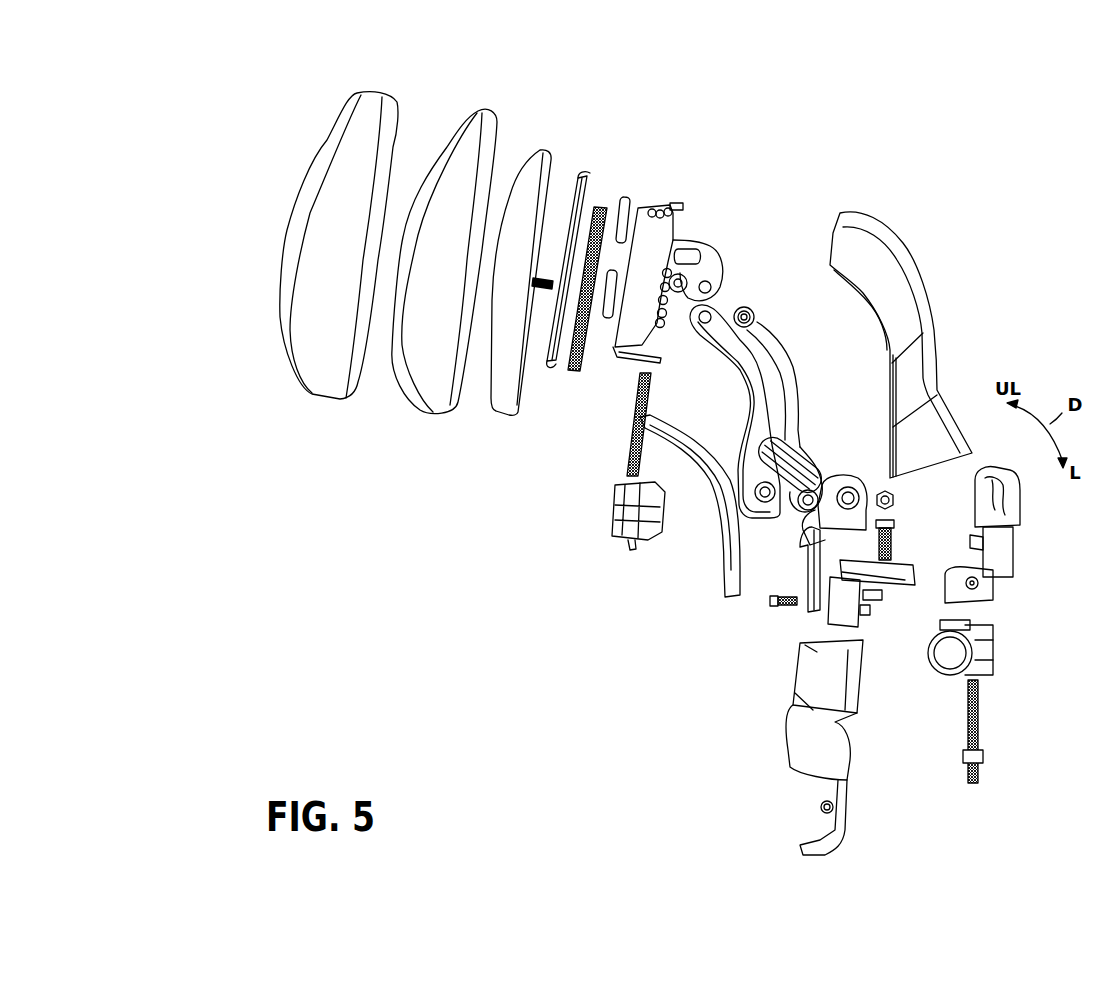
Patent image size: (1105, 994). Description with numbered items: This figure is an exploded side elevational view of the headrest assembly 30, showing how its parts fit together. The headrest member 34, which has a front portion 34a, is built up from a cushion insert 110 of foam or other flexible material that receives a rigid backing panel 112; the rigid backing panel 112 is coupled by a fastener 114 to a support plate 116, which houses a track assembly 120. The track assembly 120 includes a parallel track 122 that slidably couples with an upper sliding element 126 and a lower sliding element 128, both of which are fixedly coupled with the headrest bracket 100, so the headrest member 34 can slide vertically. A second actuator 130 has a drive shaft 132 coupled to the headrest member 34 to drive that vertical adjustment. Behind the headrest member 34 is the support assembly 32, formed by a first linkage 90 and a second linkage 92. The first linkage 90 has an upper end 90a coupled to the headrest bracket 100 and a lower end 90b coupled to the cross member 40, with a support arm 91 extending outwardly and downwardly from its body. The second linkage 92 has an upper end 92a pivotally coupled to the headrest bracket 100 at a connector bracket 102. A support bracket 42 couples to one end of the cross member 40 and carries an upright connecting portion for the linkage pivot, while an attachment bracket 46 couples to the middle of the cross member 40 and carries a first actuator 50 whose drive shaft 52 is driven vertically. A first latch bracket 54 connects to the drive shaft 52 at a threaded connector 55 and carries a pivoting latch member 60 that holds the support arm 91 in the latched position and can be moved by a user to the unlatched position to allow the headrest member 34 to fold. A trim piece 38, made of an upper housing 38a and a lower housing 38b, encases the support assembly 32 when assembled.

The headrest assembly 30 is at (964, 244).
The support assembly 32 is at (772, 224).
The headrest member 34 is at (355, 72).
The front portion 34a is at (282, 315).
The trim piece 38 is at (875, 214).
The upper housing 38a is at (923, 293).
The lower housing 38b is at (722, 495).
The cross member 40 is at (817, 618).
The support bracket 42 is at (803, 582).
The attachment bracket 46 is at (1023, 562).
The first actuator 50 is at (990, 660).
The drive shaft 52 is at (977, 727).
The first latch bracket 54 is at (1020, 557).
The threaded connector 55 is at (1013, 565).
The latch member 60 is at (1003, 500).
The first linkage 90 is at (747, 393).
The upper end 90a is at (702, 342).
The lower end 90b is at (770, 523).
The support arm 91 is at (792, 453).
The second linkage 92 is at (792, 362).
The upper end 92a is at (747, 307).
The headrest bracket 100 is at (657, 242).
The connector bracket 102 is at (713, 257).
The cushion insert 110 is at (405, 388).
The rigid backing panel 112 is at (497, 402).
The fastener 114 is at (533, 363).
The support plate 116 is at (567, 193).
The track assembly 120 is at (605, 112).
The parallel track 122 is at (600, 208).
The upper sliding element 126 is at (627, 195).
The lower sliding element 128 is at (606, 318).
The second actuator 130 is at (610, 530).
The drive shaft 132 is at (623, 460).